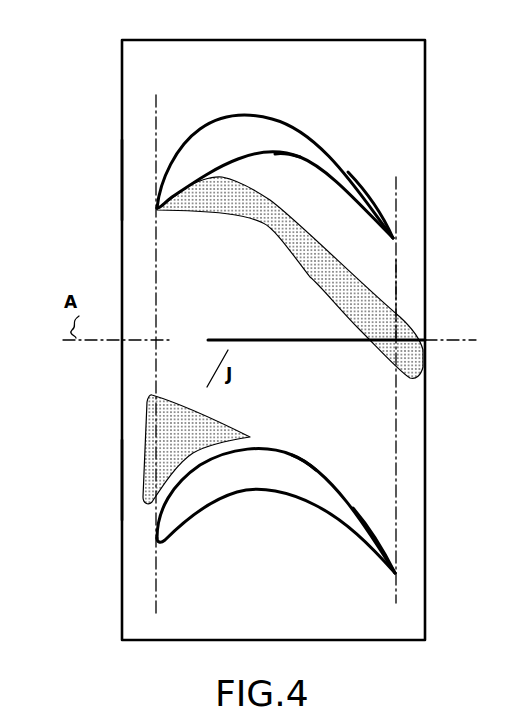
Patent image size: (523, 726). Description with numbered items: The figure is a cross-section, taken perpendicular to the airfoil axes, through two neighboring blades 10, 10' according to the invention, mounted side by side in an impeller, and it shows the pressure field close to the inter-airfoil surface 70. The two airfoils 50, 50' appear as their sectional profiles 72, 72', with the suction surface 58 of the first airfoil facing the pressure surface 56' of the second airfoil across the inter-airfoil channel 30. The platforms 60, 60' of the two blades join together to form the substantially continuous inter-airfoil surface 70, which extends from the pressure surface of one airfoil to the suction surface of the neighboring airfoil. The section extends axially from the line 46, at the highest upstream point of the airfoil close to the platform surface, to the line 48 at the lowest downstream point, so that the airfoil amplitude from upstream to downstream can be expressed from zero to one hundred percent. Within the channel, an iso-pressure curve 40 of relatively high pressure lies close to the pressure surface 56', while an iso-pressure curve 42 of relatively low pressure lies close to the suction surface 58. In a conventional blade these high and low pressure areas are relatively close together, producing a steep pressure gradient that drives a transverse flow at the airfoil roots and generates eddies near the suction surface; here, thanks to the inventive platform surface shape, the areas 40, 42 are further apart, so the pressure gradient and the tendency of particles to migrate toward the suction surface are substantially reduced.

The blade 10' is at (275, 149).
The blade 10 is at (276, 478).
The airfoil 50' is at (275, 176).
The airfoil 50 is at (276, 511).
The pressure surface 56' is at (303, 182).
The suction surface 58 is at (308, 463).
The profile 72' is at (375, 189).
The profile 72 is at (375, 522).
The line 46 is at (156, 107).
The line 48 is at (396, 187).
The inter-airfoil channel 30 is at (398, 307).
The platform 60' is at (92, 170).
The platform 60 is at (93, 474).
The iso-pressure curve 40 is at (247, 215).
The iso-pressure curve 42 is at (150, 418).
The inter-airfoil surface 70 is at (202, 351).